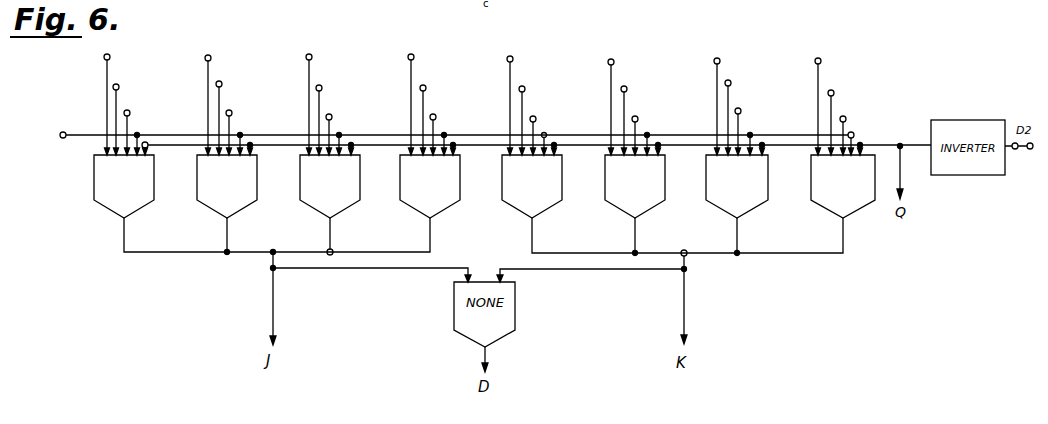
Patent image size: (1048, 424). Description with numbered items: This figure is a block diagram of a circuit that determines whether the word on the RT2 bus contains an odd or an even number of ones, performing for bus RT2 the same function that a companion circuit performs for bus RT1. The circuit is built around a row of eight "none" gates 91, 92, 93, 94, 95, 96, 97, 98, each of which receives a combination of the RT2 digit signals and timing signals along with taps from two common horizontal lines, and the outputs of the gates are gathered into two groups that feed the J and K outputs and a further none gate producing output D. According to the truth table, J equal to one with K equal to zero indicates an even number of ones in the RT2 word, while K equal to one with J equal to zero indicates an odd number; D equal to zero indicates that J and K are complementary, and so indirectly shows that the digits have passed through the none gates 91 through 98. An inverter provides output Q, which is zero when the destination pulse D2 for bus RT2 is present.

The none gate 91 is at (110, 208).
The none gate 92 is at (213, 208).
The none gate 93 is at (316, 208).
The none gate 94 is at (416, 208).
The none gate 95 is at (519, 208).
The none gate 96 is at (622, 208).
The none gate 97 is at (724, 208).
The none gate 98 is at (826, 208).